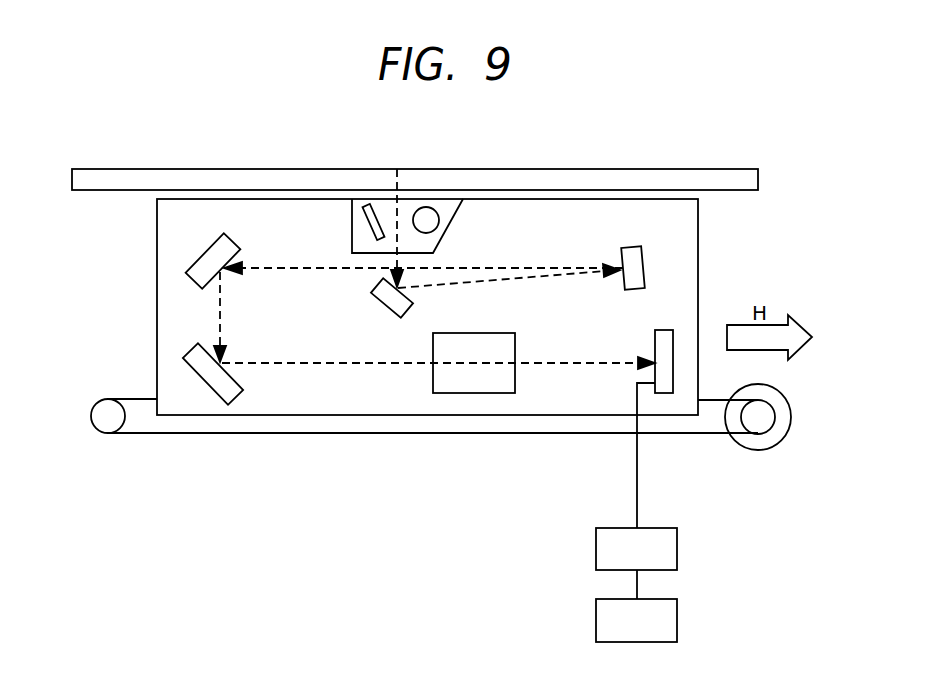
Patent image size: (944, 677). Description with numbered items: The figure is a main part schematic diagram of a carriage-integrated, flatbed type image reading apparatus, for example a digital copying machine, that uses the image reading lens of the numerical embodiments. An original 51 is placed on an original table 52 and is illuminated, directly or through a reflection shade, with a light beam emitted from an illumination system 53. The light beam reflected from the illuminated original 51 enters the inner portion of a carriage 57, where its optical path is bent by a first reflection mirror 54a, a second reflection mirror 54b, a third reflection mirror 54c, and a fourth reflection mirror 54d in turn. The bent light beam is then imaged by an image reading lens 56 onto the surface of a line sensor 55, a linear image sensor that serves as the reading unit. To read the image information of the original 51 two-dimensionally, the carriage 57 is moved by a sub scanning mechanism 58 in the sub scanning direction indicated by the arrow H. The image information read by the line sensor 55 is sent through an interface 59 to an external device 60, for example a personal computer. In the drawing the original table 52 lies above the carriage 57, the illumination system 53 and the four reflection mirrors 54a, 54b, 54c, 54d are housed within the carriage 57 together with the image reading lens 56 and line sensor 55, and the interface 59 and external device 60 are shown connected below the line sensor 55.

The original 51 is at (417, 168).
The original table 52 is at (698, 178).
The illumination system 53 is at (432, 208).
The first reflection mirror 54a is at (382, 308).
The second reflection mirror 54b is at (628, 247).
The third reflection mirror 54c is at (187, 258).
The fourth reflection mirror 54d is at (195, 368).
The line sensor 55 is at (667, 393).
The image reading lens 56 is at (473, 393).
The carriage 57 is at (699, 242).
The sub scanning mechanism 58 is at (758, 450).
The interface 59 is at (636, 549).
The external device 60 is at (636, 620).